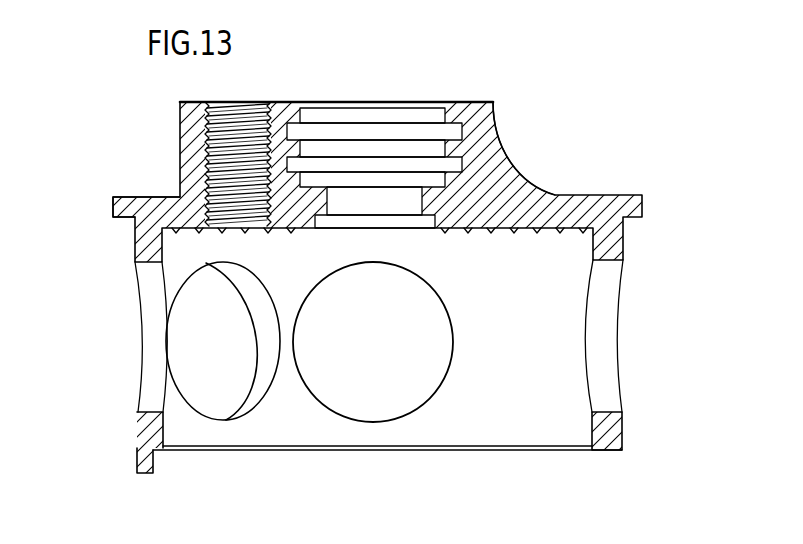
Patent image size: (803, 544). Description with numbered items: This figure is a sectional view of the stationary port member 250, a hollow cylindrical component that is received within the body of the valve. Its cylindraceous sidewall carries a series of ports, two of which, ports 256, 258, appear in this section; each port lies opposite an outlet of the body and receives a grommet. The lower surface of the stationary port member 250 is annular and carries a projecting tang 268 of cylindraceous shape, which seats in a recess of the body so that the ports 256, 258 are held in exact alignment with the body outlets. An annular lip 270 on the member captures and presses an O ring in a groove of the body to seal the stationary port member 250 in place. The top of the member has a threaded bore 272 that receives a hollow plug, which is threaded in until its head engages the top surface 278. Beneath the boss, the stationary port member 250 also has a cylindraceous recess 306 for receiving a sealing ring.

The stationary port member 250 is at (625, 238).
The port 256 is at (225, 393).
The port 258 is at (402, 397).
The projecting tang 268 is at (155, 465).
The annular lip 270 is at (112, 205).
The threaded bore 272 is at (205, 137).
The top surface 278 is at (474, 102).
The cylindraceous recess 306 is at (326, 229).